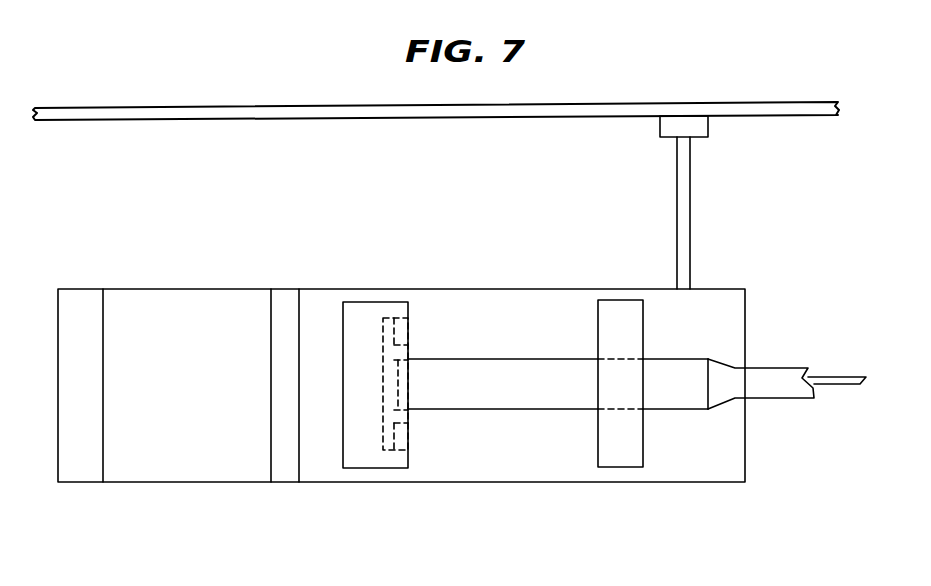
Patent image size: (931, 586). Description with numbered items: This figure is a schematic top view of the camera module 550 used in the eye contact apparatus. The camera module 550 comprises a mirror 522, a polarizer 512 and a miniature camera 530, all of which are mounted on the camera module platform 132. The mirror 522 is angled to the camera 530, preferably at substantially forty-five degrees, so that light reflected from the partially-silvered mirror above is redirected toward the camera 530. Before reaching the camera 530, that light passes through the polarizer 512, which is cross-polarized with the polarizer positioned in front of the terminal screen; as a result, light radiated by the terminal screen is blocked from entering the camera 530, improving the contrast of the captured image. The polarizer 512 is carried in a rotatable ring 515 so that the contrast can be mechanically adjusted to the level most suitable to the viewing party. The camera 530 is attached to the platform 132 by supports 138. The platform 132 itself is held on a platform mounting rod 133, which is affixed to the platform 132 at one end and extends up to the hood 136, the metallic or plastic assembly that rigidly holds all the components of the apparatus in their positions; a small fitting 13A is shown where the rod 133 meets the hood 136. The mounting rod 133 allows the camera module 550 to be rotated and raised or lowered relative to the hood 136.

The hood 136 is at (216, 107).
The mounting block 13A is at (672, 140).
The platform mounting rod 133 is at (691, 237).
The camera module platform 132 is at (718, 465).
The mirror 522 is at (187, 291).
The camera module 550 is at (373, 234).
The polarizer 512 is at (383, 365).
The rotatable ring 515 is at (402, 328).
The miniature camera 530 is at (541, 375).
The supports 138 is at (393, 458).